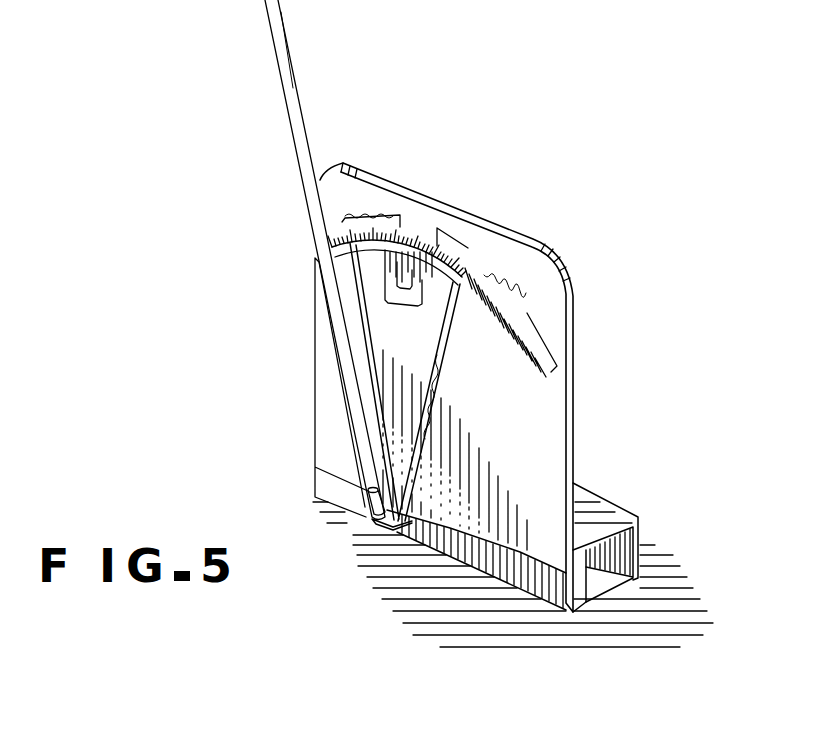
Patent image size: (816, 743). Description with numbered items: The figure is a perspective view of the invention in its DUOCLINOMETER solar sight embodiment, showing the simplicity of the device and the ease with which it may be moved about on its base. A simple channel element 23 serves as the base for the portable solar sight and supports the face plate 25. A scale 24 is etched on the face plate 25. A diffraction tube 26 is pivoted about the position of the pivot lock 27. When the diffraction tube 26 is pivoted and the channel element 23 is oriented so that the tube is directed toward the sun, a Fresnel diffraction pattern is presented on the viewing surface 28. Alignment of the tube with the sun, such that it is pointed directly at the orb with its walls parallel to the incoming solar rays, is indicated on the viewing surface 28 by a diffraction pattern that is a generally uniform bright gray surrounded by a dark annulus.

The channel element 23 is at (641, 538).
The scale 24 is at (473, 251).
The face plate 25 is at (328, 389).
The diffraction tube 26 is at (279, 72).
The pivot lock 27 is at (395, 495).
The viewing surface 28 is at (366, 511).